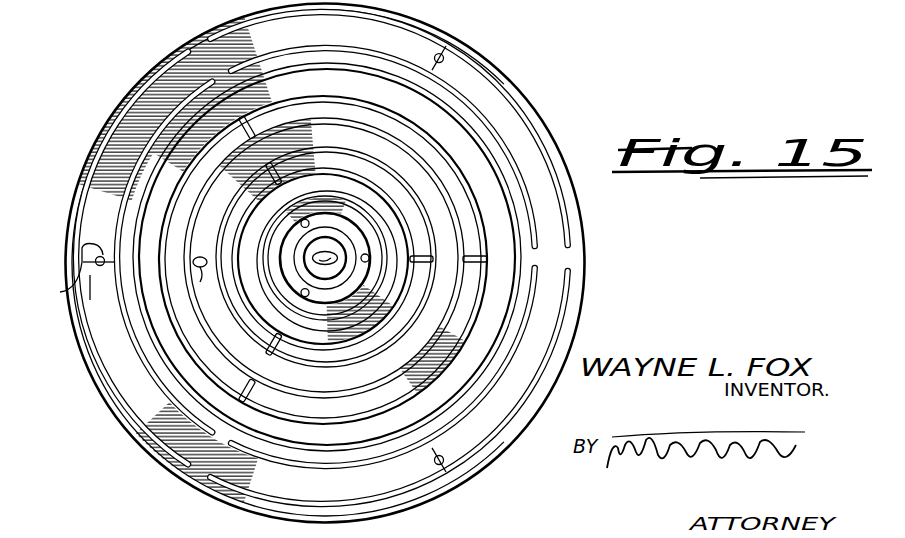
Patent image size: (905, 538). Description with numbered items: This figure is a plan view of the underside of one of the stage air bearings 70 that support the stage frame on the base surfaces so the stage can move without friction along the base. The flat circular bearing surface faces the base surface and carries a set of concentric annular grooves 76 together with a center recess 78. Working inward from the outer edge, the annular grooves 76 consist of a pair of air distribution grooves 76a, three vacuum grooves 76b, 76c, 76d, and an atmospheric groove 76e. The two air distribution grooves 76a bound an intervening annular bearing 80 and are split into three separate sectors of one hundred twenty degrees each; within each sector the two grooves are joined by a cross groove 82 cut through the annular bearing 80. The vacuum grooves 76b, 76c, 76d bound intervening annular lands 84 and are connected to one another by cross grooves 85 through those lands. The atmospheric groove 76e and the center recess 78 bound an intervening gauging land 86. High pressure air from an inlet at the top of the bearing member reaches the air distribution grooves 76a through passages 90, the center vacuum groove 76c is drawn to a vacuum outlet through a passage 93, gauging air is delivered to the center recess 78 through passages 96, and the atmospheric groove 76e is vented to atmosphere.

The air bearing 70 is at (510, 60).
The annular grooves 76 is at (497, 165).
The air distribution grooves 76a is at (123, 207).
The vacuum groove 76b is at (207, 117).
The center vacuum groove 76c is at (217, 168).
The vacuum groove 76d is at (260, 220).
The atmospheric groove 76e is at (350, 230).
The center recess 78 is at (325, 247).
The annular bearing 80 is at (117, 350).
The cross groove 82 is at (115, 283).
The annular lands 84 is at (125, 230).
The cross grooves 85 is at (278, 163).
The gauging land 86 is at (343, 280).
The passages 90 is at (175, 247).
The passage 93 is at (206, 282).
The passages 96 is at (325, 265).